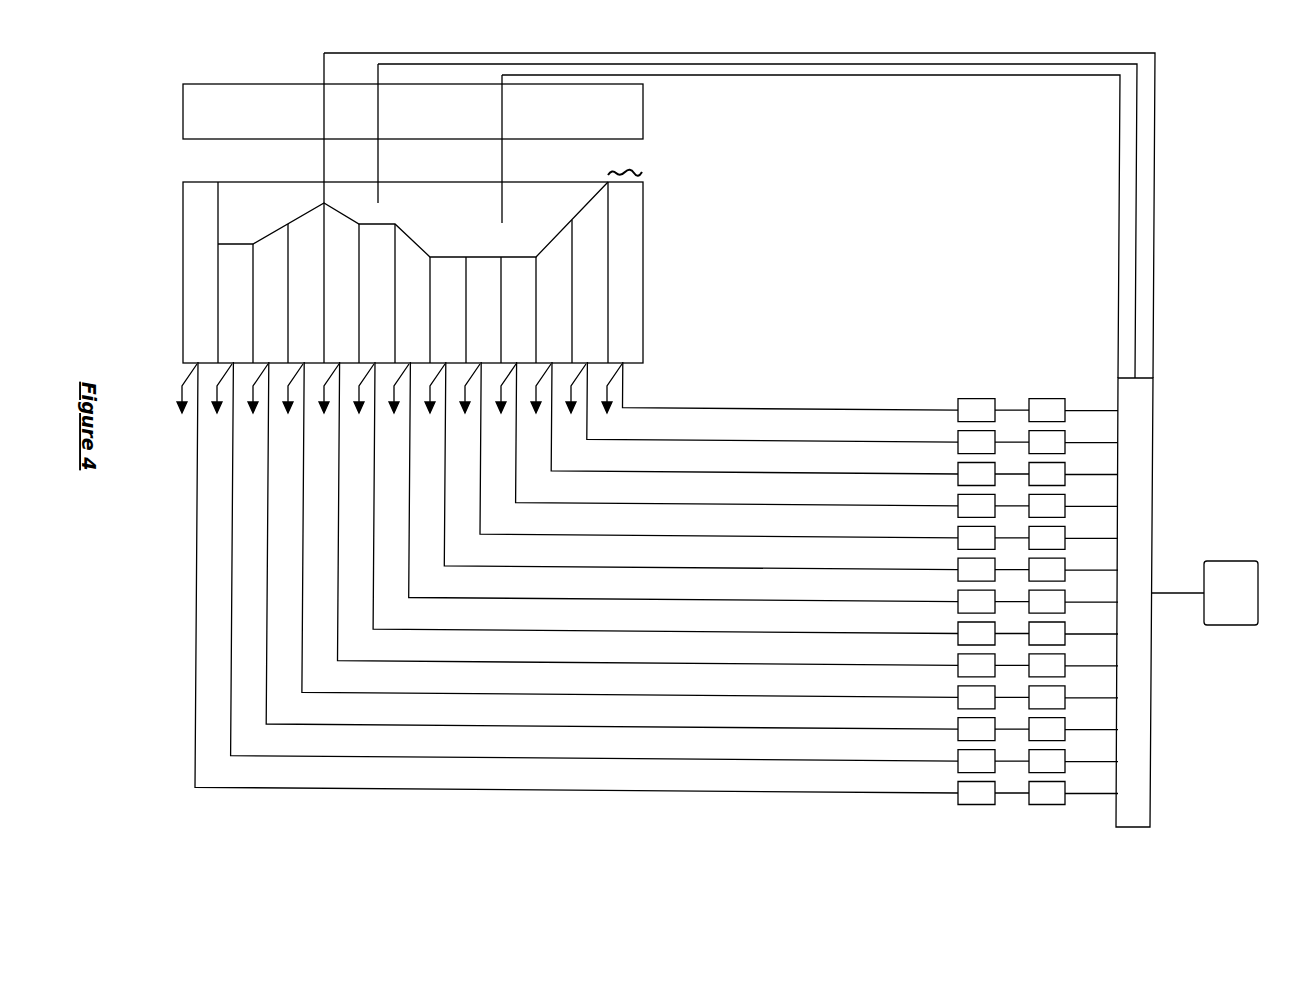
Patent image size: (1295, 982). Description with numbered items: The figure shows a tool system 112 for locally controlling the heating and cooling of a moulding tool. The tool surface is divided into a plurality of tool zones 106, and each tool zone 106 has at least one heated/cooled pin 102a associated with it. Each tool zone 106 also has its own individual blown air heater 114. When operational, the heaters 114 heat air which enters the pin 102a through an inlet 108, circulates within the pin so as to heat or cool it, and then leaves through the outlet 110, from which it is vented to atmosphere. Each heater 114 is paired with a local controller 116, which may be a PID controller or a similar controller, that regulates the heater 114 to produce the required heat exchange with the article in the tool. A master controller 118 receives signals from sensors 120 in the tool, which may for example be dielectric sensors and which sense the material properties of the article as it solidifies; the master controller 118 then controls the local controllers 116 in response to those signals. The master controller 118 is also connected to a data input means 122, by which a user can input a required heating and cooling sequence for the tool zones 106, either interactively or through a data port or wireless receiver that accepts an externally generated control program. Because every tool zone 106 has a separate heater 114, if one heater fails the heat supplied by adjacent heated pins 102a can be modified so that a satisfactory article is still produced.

The heated/cooled pin 102a is at (643, 282).
The tool zone 106 is at (622, 166).
The inlet 108 is at (630, 369).
The outlet 110 is at (173, 387).
The tool system 112 is at (1208, 290).
The blown air heater 114 is at (982, 403).
The local controller 116 is at (1058, 403).
The master controller 118 is at (1137, 442).
The sensors 120 is at (318, 192).
The data input means 122 is at (1204, 593).